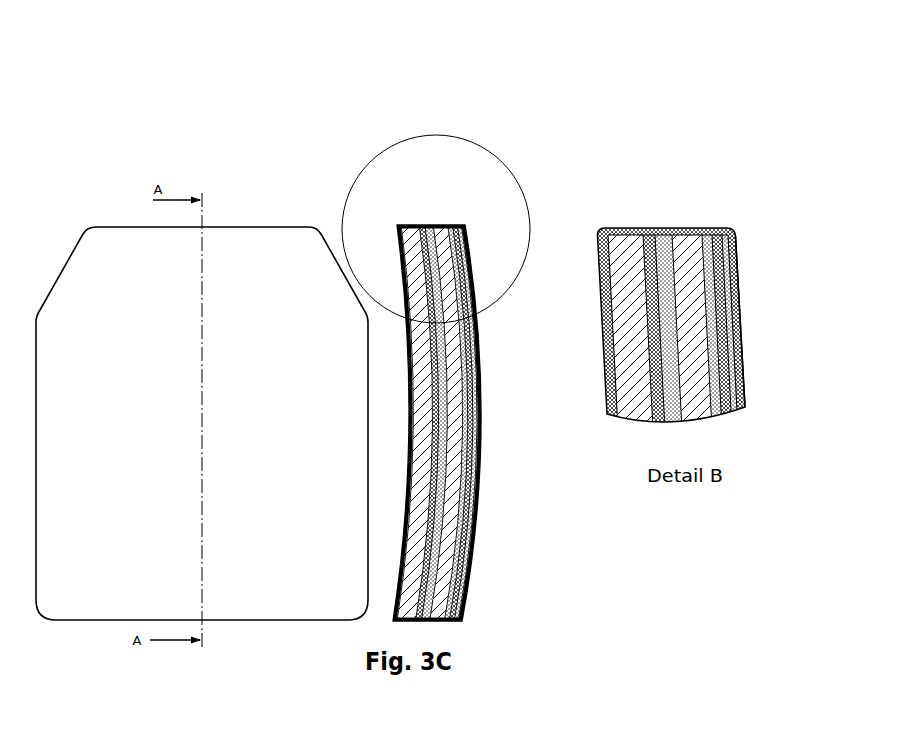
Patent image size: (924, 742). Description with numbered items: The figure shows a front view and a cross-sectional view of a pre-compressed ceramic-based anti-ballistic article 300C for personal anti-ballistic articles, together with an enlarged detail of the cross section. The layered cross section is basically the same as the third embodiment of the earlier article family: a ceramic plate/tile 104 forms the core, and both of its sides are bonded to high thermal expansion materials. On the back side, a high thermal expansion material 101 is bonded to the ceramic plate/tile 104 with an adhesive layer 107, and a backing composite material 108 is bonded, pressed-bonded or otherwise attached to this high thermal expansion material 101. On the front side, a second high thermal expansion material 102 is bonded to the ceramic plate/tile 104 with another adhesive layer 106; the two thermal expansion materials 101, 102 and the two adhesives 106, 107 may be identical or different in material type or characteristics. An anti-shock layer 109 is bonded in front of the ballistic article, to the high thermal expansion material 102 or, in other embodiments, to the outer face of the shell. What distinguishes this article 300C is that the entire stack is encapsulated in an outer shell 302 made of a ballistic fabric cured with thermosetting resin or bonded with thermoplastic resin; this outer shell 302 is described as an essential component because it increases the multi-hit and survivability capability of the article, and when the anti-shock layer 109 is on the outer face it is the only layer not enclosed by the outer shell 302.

The pre-compressed ceramic-based anti-ballistic article 300C is at (524, 134).
The high thermal expansion material 101 is at (622, 232).
The backing composite material 108 is at (621, 275).
The adhesive layer 107 is at (650, 265).
The ceramic plate/tile 104 is at (681, 262).
The adhesive layer 106 is at (703, 265).
The high thermal expansion material 102 is at (718, 264).
The anti-shock layer 109 is at (738, 264).
The outer shell 302 is at (748, 298).